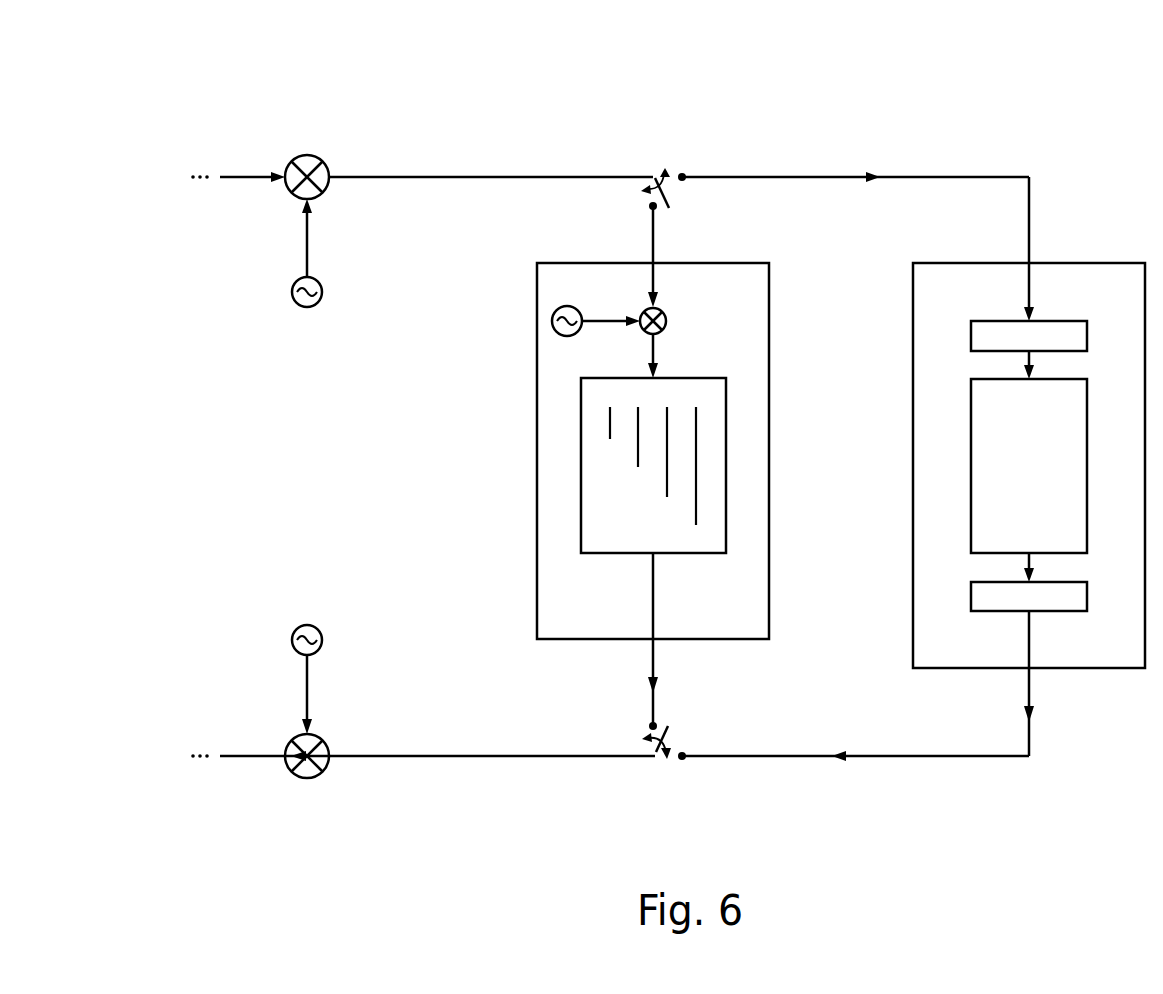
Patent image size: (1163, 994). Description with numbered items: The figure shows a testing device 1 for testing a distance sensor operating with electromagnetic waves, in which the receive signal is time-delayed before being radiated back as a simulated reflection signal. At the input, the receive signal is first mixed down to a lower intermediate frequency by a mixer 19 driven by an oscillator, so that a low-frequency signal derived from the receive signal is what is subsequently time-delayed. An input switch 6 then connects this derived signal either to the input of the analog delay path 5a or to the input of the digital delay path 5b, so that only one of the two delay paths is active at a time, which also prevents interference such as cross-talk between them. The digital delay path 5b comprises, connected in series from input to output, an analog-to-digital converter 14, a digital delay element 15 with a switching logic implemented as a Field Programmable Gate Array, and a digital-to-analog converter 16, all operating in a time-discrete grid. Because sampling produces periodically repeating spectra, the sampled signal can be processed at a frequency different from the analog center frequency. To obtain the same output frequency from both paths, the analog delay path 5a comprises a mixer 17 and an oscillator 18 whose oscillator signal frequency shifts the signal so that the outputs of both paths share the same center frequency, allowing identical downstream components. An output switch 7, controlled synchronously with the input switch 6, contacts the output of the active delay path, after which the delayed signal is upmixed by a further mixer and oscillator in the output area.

The testing device 1 is at (826, 104).
The analog delay path 5a is at (581, 304).
The digital delay path 5b is at (956, 304).
The input switch 6 is at (670, 186).
The output switch 7 is at (668, 759).
The analog-to-digital converter 14 is at (1029, 336).
The digital delay element 15 is at (1029, 466).
The digital-to-analog converter 16 is at (1029, 596).
The mixer 17 is at (666, 322).
The oscillator 18 is at (572, 336).
The mixer 19 is at (326, 162).